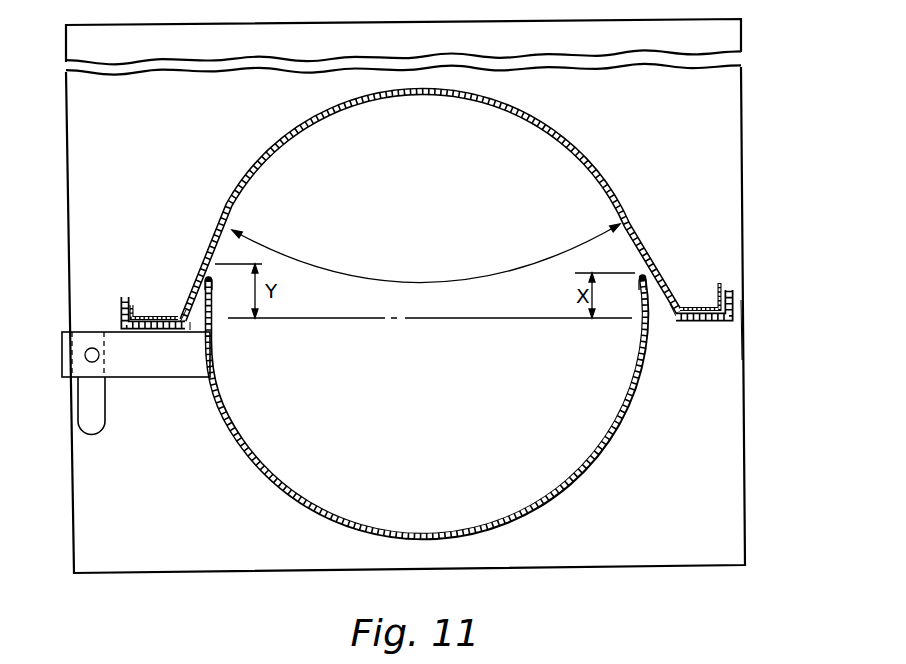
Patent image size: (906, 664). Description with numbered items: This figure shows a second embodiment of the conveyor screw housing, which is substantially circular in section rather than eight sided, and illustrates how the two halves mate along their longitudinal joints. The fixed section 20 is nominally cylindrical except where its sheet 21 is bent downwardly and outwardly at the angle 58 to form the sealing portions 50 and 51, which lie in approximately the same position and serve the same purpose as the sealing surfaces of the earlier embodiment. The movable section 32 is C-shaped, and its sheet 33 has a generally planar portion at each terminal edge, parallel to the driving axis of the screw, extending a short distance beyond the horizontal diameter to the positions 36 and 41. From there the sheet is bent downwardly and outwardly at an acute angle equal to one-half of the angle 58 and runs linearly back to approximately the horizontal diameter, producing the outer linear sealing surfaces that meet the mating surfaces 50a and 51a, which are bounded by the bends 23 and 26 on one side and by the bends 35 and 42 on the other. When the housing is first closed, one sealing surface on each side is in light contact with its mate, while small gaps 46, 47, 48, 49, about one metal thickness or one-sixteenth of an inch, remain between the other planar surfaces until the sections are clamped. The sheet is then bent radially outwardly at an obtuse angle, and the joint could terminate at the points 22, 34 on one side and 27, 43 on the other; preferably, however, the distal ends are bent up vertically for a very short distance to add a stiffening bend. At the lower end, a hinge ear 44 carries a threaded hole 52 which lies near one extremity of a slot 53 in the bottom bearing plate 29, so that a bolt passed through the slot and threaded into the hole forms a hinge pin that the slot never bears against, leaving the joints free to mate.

The fixed section 20 is at (436, 205).
The sheet 21 is at (436, 205).
The joint termination point 22 is at (129, 306).
The bend 23 is at (170, 313).
The bend 26 is at (707, 276).
The joint termination point 27 is at (719, 283).
The bottom bearing plate 29 is at (745, 432).
The movable section 32 is at (439, 407).
The sheet 33 is at (613, 438).
The joint termination point 34 is at (102, 332).
The bend 35 is at (193, 325).
The bend 36 is at (209, 277).
The bend 41 is at (640, 272).
The bend 42 is at (732, 312).
The joint termination point 43 is at (743, 328).
The hinge ear 44 is at (170, 380).
The gap 46 is at (129, 310).
The gap 47 is at (142, 331).
The gap 48 is at (736, 308).
The gap 49 is at (737, 278).
The planar sealing surface 50 is at (436, 205).
The planar sealing surface 50a is at (190, 313).
The planar sealing surface 51 is at (672, 290).
The planar sealing surface 51a is at (670, 311).
The threaded hole 52 is at (98, 362).
The slot 53 is at (107, 425).
The angle 58 is at (497, 270).